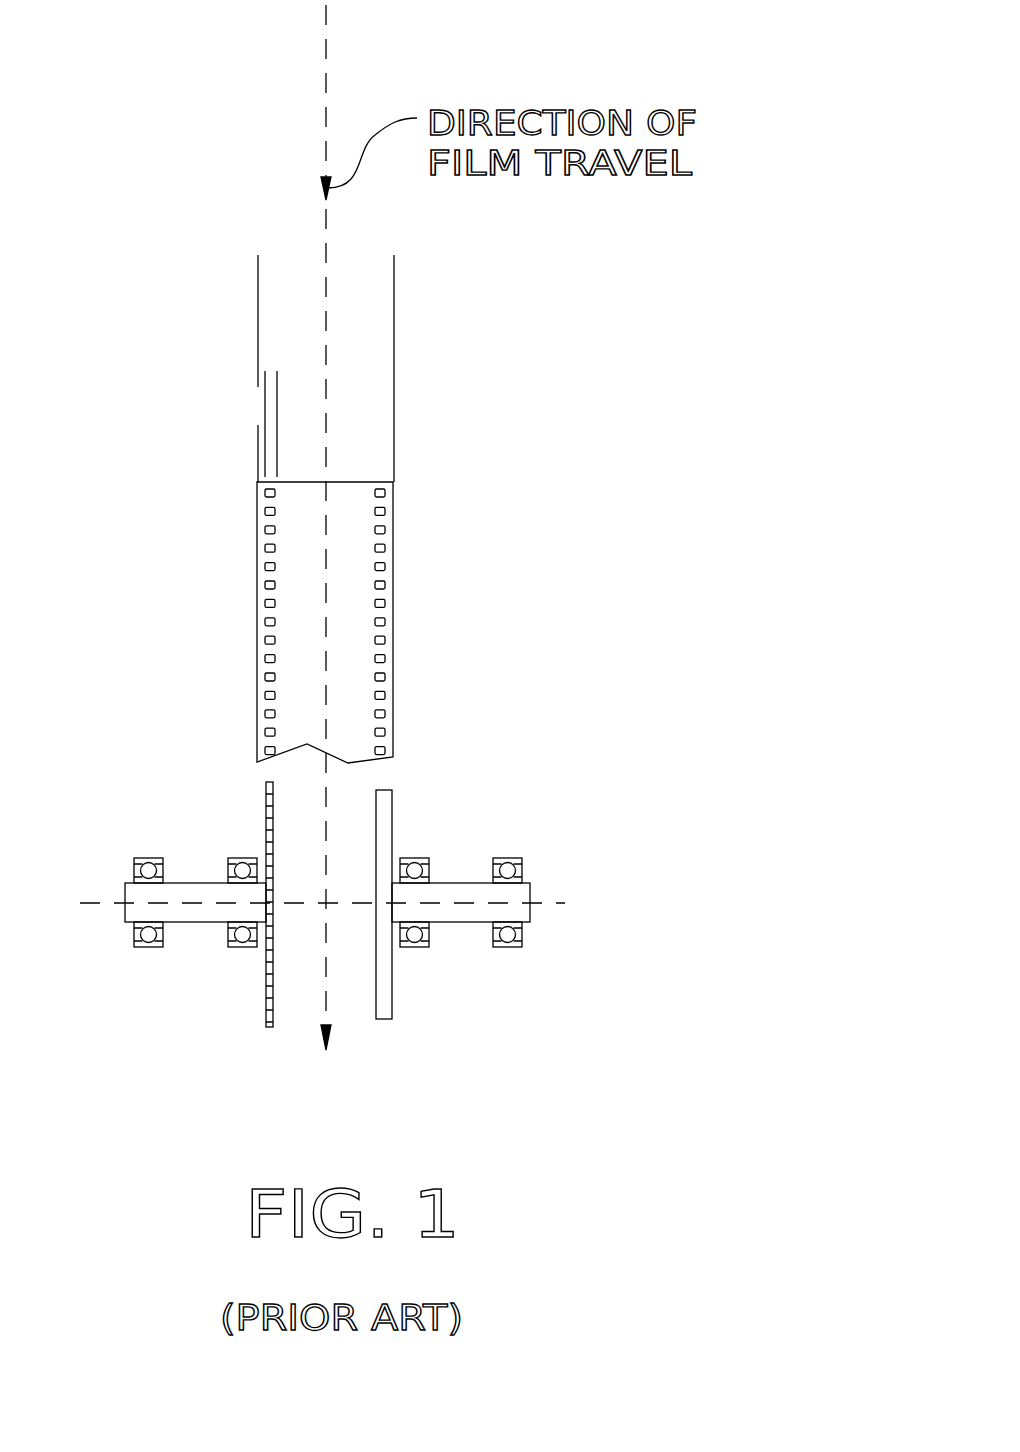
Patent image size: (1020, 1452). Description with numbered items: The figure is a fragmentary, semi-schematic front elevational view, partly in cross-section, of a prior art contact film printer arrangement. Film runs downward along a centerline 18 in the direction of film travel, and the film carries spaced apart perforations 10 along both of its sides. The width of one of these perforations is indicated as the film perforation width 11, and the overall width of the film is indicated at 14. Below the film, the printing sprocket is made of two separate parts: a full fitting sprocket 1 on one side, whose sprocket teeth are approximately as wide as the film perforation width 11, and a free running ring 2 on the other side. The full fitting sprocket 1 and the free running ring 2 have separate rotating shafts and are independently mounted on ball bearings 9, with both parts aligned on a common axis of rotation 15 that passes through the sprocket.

The centerline 18 is at (328, 80).
The film width 14 is at (186, 296).
The film perforation width 11 is at (339, 406).
The perforations 10 is at (263, 621).
The full fitting sprocket 1 is at (266, 806).
The free running ring 2 is at (392, 808).
The common axis of rotation 15 is at (545, 903).
The ball bearings 9 is at (148, 947).